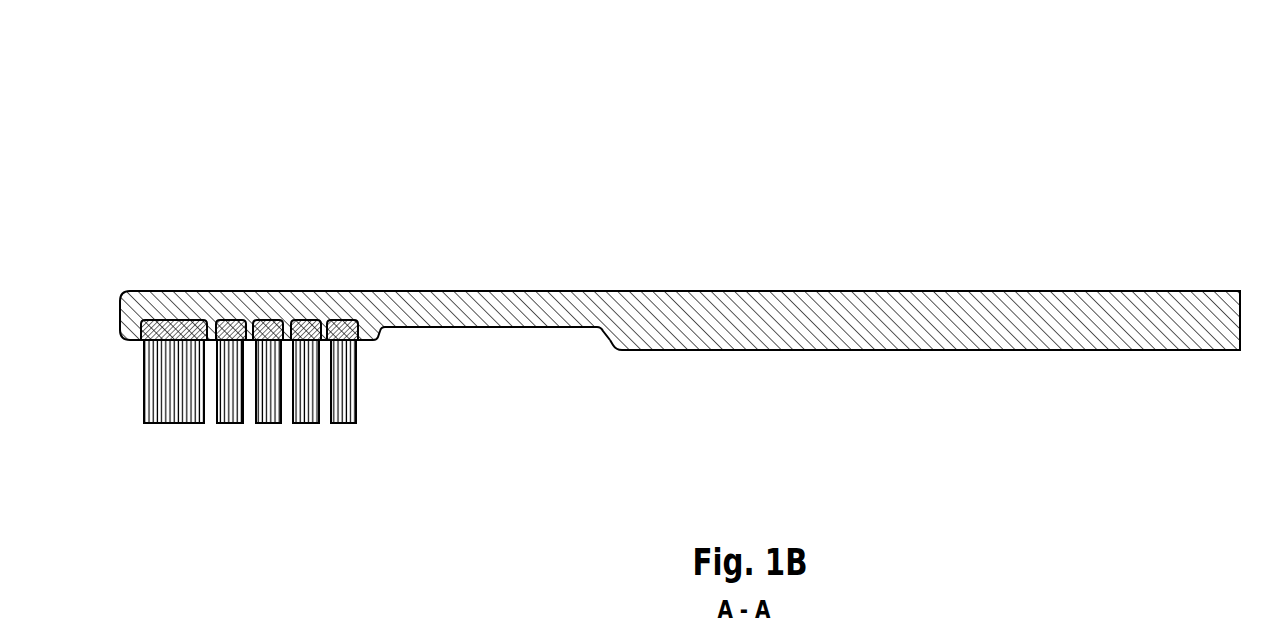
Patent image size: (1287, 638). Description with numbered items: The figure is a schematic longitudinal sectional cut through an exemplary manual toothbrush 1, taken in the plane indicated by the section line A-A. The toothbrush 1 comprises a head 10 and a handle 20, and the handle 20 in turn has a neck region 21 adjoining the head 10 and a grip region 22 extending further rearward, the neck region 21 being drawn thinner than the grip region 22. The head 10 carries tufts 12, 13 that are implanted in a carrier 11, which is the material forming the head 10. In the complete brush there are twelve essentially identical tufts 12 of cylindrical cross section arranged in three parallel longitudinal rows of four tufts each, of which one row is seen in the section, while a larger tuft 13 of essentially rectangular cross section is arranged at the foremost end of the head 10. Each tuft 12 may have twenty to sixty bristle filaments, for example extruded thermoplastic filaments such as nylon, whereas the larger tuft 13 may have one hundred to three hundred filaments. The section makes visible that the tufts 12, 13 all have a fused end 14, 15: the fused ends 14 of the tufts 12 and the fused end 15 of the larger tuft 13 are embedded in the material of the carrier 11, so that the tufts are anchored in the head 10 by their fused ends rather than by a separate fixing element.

The toothbrush 1 is at (782, 110).
The head 10 is at (223, 230).
The carrier 11 is at (128, 313).
The tufts 12 is at (230, 423).
The larger tuft 13 is at (175, 423).
The fused end 14 is at (230, 320).
The fused end 15 is at (180, 291).
The handle 20 is at (908, 212).
The neck region 21 is at (502, 349).
The grip region 22 is at (910, 373).